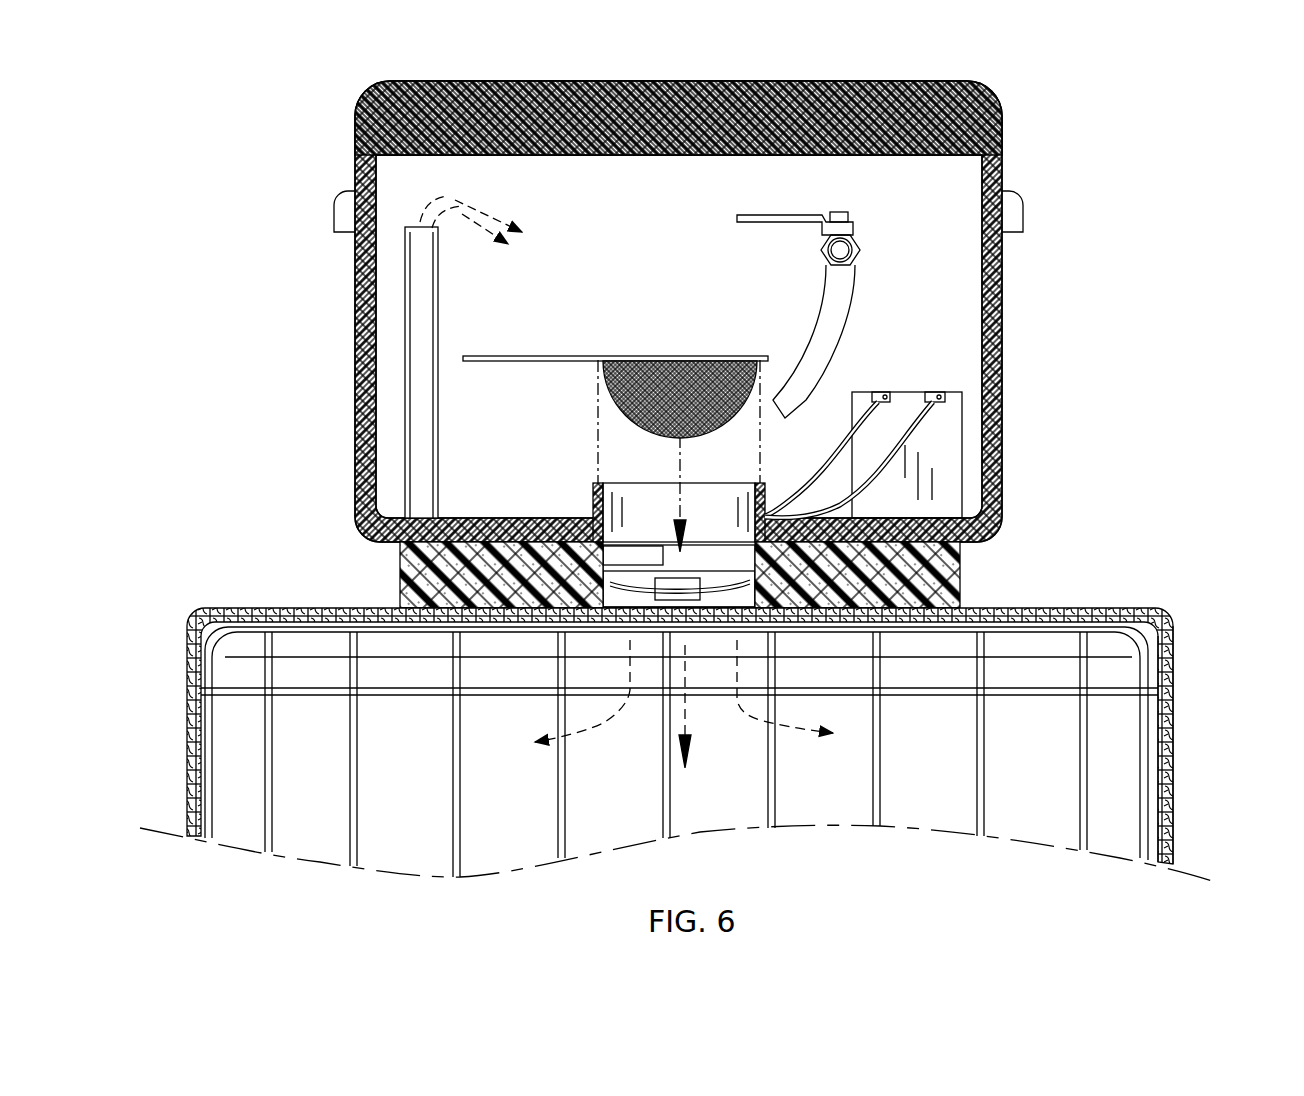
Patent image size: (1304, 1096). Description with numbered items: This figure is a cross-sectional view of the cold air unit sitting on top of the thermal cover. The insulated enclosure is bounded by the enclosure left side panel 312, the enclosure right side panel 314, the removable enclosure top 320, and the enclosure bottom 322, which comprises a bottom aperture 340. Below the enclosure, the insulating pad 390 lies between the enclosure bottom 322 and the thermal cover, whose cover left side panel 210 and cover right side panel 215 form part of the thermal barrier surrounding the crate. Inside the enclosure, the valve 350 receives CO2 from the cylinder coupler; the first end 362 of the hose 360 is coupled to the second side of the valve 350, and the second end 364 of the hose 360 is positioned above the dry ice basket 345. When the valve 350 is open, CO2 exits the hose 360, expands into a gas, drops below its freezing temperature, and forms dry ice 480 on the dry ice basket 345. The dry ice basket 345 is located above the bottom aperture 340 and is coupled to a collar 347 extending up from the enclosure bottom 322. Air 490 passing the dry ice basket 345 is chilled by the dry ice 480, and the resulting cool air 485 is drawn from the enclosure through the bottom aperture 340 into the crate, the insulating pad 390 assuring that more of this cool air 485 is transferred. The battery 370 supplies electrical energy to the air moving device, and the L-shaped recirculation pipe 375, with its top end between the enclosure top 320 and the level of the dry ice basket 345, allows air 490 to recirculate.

The cover left side panel 210 is at (187, 745).
The cover right side panel 215 is at (1175, 750).
The enclosure left side panel 312 is at (355, 305).
The enclosure right side panel 314 is at (1005, 467).
The enclosure top 320 is at (483, 85).
The enclosure bottom 322 is at (962, 549).
The bottom aperture 340 is at (720, 548).
The dry ice basket 345 is at (638, 356).
The collar 347 is at (765, 485).
The valve 350 is at (838, 222).
The hose 360 is at (837, 328).
The first end of the hose 362 is at (843, 292).
The second end of the hose 364 is at (780, 402).
The battery 370 is at (937, 423).
The recirculation pipe 375 is at (418, 494).
The insulating pad 390 is at (962, 581).
The dry ice 480 is at (615, 390).
The cool air 485 is at (628, 700).
The air 490 is at (485, 205).